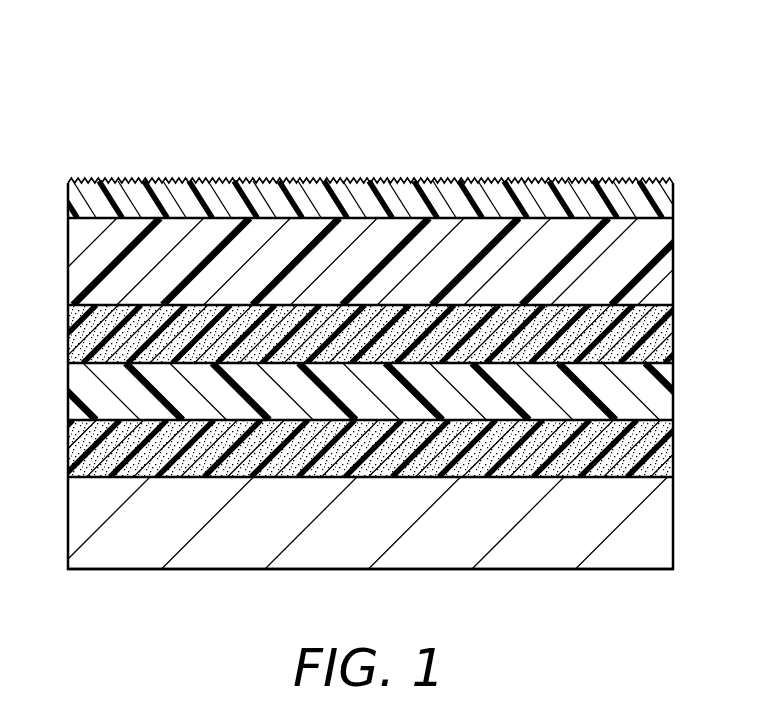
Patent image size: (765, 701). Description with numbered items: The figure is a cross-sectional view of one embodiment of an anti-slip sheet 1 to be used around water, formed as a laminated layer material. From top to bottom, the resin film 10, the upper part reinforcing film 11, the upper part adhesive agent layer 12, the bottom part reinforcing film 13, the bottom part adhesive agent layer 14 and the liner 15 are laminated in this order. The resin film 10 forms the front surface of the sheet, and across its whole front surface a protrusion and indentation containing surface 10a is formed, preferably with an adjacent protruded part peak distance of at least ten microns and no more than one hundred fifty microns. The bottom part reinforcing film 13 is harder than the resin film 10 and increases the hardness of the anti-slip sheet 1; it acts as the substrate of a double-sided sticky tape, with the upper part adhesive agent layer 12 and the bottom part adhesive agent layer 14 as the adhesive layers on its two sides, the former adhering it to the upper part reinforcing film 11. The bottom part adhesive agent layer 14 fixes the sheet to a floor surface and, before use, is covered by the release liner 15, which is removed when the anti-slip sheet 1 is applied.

The anti-slip sheet 1 is at (78, 92).
The resin film 10 is at (667, 203).
The protrusion and indentation containing surface 10a is at (662, 181).
The upper part reinforcing film 11 is at (667, 273).
The upper part adhesive agent layer 12 is at (673, 335).
The bottom part reinforcing film 13 is at (667, 393).
The bottom part adhesive agent layer 14 is at (673, 450).
The liner 15 is at (667, 530).